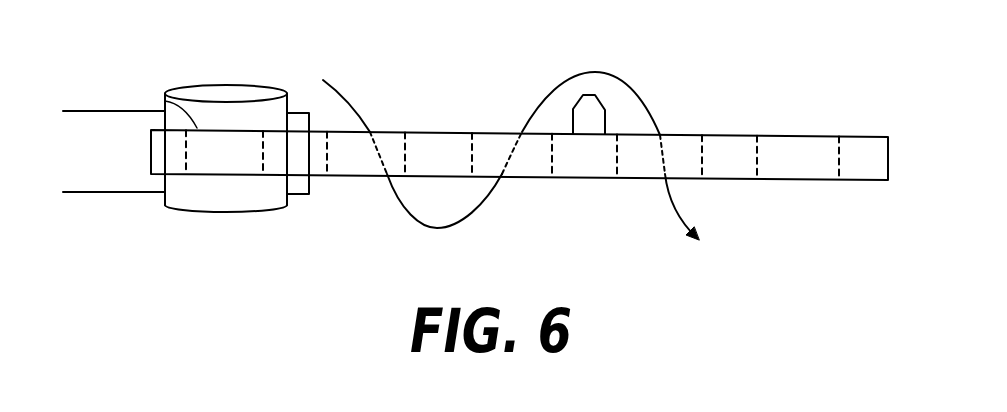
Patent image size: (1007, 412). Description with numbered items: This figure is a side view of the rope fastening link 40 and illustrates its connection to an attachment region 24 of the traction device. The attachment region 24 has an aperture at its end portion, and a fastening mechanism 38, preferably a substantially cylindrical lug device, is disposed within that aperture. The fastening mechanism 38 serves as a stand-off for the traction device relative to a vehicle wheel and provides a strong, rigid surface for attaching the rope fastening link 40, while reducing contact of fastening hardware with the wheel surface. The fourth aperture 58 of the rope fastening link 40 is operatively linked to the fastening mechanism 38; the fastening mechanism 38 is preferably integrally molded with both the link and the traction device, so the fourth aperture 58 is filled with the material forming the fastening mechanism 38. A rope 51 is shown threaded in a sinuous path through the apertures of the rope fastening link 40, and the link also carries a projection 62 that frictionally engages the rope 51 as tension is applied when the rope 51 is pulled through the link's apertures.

The attachment region 24 is at (88, 170).
The fastening mechanism 38 is at (240, 192).
The rope fastening link 40 is at (798, 104).
The wire / sinuous path 51 is at (533, 107).
The fourth aperture 58 is at (165, 101).
The projection 62 is at (605, 115).